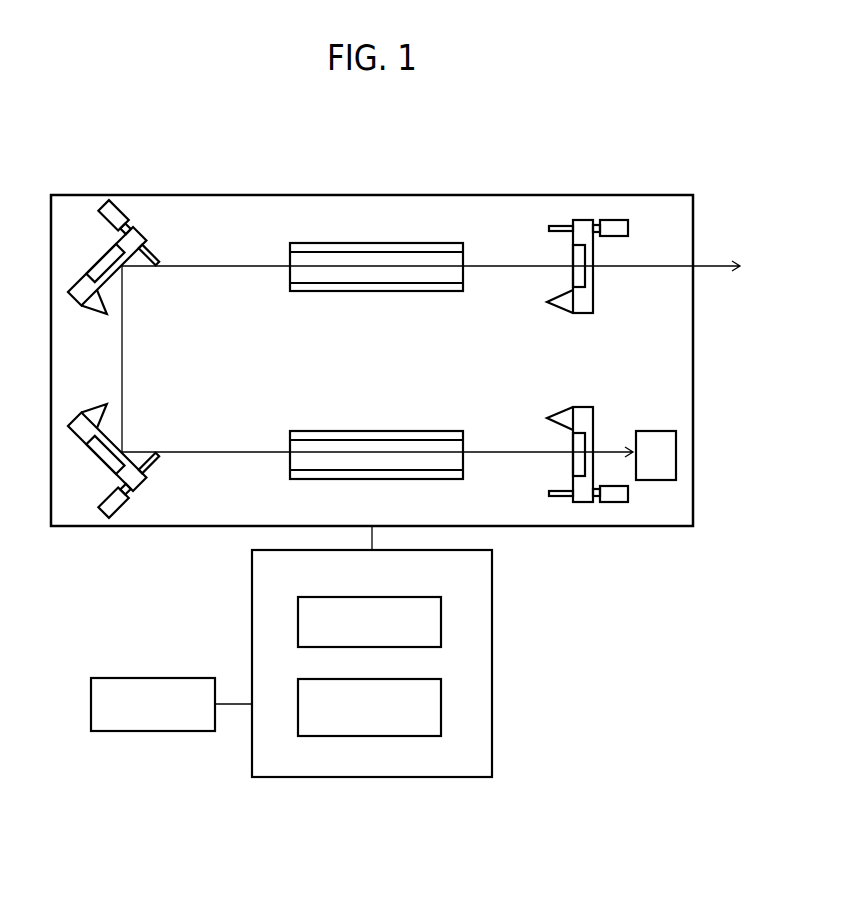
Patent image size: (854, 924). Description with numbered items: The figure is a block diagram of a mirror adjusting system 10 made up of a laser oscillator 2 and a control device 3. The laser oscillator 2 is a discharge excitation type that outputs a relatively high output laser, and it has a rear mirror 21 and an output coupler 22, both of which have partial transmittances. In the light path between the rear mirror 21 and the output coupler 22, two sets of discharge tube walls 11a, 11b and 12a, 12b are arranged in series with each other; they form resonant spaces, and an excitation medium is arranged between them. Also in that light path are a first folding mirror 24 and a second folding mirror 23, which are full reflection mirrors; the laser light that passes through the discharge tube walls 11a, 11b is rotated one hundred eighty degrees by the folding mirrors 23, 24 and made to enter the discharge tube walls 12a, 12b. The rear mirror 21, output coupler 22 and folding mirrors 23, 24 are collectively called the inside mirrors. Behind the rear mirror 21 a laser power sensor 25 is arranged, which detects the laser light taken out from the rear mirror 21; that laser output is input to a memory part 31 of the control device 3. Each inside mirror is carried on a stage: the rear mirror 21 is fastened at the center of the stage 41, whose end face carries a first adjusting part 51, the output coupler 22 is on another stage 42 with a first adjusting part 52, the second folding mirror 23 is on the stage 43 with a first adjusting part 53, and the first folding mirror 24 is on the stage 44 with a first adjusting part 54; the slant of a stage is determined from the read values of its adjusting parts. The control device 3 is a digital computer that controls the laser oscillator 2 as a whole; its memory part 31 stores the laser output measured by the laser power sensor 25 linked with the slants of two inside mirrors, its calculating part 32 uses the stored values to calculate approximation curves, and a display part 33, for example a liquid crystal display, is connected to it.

The mirror adjusting system 10 is at (588, 172).
The laser oscillator 2 is at (650, 527).
The control device 3 is at (492, 743).
The discharge tube wall 11a is at (433, 431).
The discharge tube wall 11b is at (432, 480).
The discharge tube wall 12a is at (432, 243).
The discharge tube wall 12b is at (447, 292).
The rear mirror 21 is at (577, 433).
The output coupler 22 is at (580, 288).
The second folding mirror 23 is at (103, 457).
The first folding mirror 24 is at (116, 246).
The laser power sensor 25 is at (663, 468).
The memory part 31 is at (441, 620).
The calculating part 32 is at (441, 705).
The display part 33 is at (152, 731).
The stage 41 is at (597, 425).
The stage 42 is at (595, 295).
The stage 43 is at (137, 482).
The stage 44 is at (141, 236).
The first adjusting part 51 is at (622, 497).
The first adjusting part 52 is at (620, 229).
The first adjusting part 53 is at (115, 507).
The first adjusting part 54 is at (118, 208).